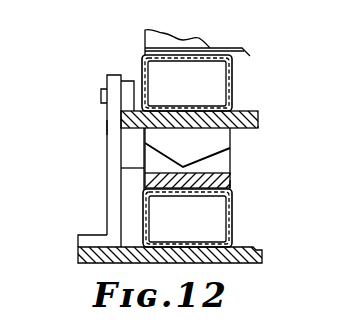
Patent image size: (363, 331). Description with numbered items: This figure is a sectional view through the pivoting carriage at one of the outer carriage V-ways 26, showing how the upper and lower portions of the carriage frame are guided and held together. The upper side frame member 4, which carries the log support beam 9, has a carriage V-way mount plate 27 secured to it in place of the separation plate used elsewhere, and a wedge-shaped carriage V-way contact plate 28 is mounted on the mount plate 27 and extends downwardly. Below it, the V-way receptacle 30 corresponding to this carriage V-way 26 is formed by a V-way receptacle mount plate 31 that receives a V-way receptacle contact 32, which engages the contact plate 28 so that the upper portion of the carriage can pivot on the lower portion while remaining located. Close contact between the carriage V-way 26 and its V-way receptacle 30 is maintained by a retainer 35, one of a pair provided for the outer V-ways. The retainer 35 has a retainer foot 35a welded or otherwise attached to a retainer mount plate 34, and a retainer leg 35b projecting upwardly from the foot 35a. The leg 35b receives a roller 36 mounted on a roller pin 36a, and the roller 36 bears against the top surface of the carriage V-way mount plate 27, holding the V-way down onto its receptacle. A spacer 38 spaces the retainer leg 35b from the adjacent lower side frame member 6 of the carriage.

The upper side frame member 4 is at (233, 82).
The lower side frame member 6 is at (233, 228).
The log support beam 9 is at (197, 43).
The carriage V-way 26 is at (265, 128).
The carriage V-way mount plate 27 is at (257, 120).
The carriage V-way contact plate 28 is at (220, 140).
The V-way receptacle 30 is at (238, 173).
The V-way receptacle mount plate 31 is at (232, 183).
The V-way receptacle contact 32 is at (220, 166).
The retainer mount plate 34 is at (253, 246).
The retainer 35 is at (102, 148).
The retainer foot 35a is at (88, 233).
The retainer leg 35b is at (106, 126).
The roller 36 is at (130, 80).
The roller pin 36a is at (101, 96).
The spacer 38 is at (137, 228).